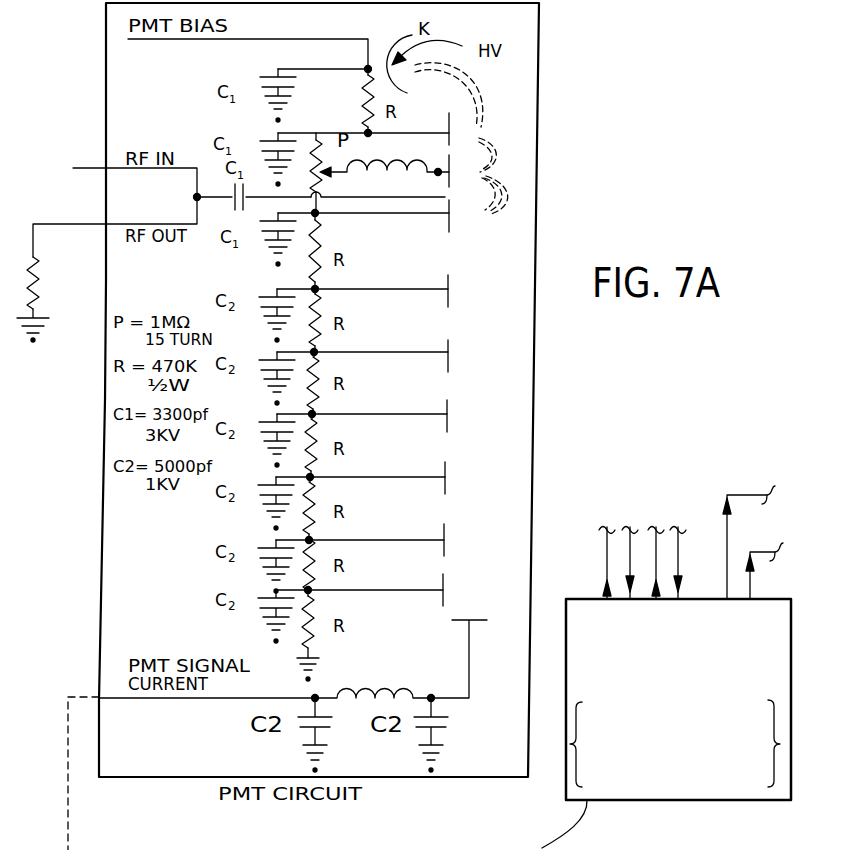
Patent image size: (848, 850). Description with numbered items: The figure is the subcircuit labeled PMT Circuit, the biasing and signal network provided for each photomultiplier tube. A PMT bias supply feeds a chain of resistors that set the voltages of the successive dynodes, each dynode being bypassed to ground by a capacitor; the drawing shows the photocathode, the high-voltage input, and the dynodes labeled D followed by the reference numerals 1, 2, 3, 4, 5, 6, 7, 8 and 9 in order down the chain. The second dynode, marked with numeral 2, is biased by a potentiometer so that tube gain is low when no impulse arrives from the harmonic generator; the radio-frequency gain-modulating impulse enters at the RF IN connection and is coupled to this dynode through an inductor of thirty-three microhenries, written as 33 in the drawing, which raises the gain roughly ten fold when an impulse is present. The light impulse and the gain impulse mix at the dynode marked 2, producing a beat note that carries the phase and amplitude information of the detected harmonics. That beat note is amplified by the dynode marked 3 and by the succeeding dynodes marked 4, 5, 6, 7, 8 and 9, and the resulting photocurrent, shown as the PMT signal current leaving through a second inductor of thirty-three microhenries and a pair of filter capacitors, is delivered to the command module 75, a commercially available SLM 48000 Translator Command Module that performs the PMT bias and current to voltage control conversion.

The command module 75 is at (668, 806).
The inductor 33 µH 33 is at (382, 429).
The dynode D1 1 is at (462, 130).
The dynode D2 2 is at (462, 171).
The dynode D3 3 is at (462, 216).
The dynode D4 4 is at (462, 291).
The dynode D5 5 is at (462, 356).
The dynode D6 6 is at (461, 416).
The dynode D7 7 is at (460, 478).
The dynode D8 8 is at (460, 540).
The dynode D9 9 is at (459, 590).